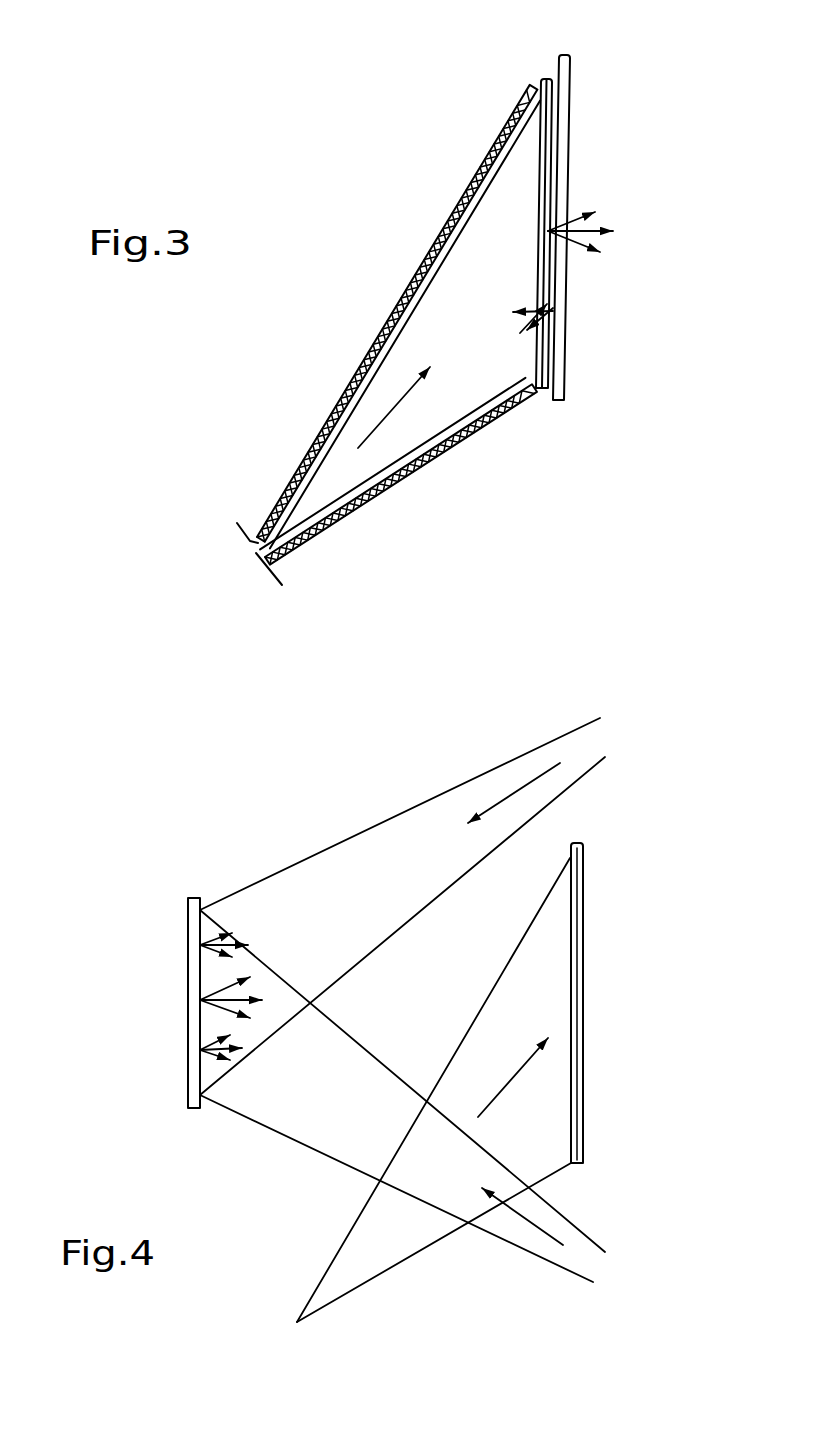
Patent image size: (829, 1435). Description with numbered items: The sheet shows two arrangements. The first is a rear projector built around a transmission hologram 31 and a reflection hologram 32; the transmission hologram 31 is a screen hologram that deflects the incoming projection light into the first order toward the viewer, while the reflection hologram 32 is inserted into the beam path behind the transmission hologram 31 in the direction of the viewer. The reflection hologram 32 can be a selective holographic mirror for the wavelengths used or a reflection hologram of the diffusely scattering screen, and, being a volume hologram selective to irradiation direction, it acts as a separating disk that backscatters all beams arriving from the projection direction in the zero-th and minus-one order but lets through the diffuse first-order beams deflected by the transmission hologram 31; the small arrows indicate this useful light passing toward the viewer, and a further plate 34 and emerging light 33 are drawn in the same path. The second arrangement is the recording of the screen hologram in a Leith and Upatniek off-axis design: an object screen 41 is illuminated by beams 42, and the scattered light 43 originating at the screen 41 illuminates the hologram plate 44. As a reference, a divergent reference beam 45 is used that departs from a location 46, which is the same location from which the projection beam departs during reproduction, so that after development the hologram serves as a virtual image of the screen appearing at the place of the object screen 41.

In FIG. 3, the transmission hologram 31 is at (537, 75).
In FIG. 3, the reflection hologram 32 is at (570, 102).
In FIG. 3, the emergent light 33 is at (585, 272).
In FIG. 3, the diffusing plate 34 is at (522, 173).
In FIG. 4, the object screen 41 is at (198, 897).
In FIG. 4, the beams 42 is at (593, 740).
In FIG. 4, the scattered light 43 is at (248, 933).
In FIG. 4, the display element 44 is at (583, 863).
In FIG. 4, the divergent reference beam 45 is at (533, 1062).
In FIG. 4, the location 46 is at (421, 1111).